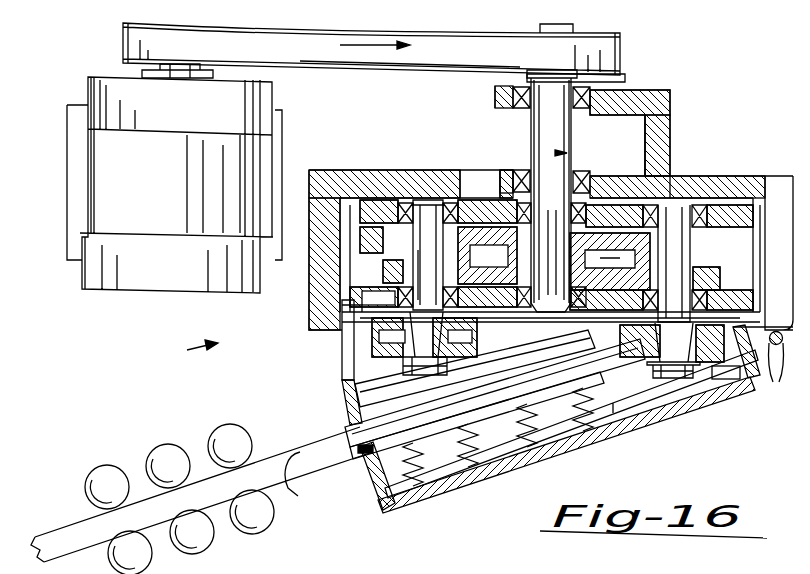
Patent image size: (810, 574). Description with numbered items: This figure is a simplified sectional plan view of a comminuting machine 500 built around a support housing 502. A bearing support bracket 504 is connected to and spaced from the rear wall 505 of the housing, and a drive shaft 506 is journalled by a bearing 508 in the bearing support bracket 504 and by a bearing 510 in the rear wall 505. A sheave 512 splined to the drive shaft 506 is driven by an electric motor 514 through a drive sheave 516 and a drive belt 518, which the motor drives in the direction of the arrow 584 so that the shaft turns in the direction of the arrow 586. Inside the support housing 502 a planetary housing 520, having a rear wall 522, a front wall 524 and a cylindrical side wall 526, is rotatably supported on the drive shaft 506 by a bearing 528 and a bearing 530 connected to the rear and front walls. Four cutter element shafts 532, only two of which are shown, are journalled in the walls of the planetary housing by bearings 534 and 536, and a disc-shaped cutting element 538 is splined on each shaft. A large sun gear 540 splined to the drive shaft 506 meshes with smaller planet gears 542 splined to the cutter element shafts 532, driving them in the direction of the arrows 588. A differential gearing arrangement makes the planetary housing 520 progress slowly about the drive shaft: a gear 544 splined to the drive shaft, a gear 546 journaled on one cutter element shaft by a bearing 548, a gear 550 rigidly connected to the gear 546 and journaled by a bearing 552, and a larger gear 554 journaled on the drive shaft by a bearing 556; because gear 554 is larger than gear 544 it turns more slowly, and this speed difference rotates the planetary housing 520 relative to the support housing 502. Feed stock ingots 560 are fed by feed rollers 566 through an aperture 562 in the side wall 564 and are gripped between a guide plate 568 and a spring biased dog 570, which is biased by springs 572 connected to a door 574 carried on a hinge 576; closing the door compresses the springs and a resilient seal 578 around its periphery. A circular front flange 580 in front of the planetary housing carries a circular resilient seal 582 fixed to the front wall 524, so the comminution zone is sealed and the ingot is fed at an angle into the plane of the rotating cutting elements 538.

The comminuting machine 500 is at (186, 350).
The support housing 502 is at (384, 164).
The bearing support bracket 504 is at (666, 110).
The rear wall 505 is at (673, 178).
The drive shaft 506 is at (532, 125).
The bearing 508 is at (580, 112).
The bearing 510 is at (583, 171).
The sheave 512 is at (528, 78).
The electric motor 514 is at (88, 85).
The drive sheave 516 is at (140, 24).
The drive belt 518 is at (378, 64).
The planetary housing 520 is at (333, 289).
The rear wall 522 is at (372, 170).
The front wall 524 is at (433, 297).
The cylindrical side wall 526 is at (352, 263).
The bearing 528 is at (513, 185).
The bearing 530 is at (542, 322).
The cutter element shaft 532 is at (410, 360).
The bearing 534 is at (401, 171).
The bearing 536 is at (557, 350).
The cutting element 538 is at (377, 344).
The sun gear 540 is at (612, 274).
The planet gear 542 is at (398, 272).
The gear 544 is at (515, 263).
The gear 546 is at (387, 248).
The bearing 548 is at (427, 275).
The gear 550 is at (373, 232).
The bearing 552 is at (429, 221).
The gear 554 is at (553, 252).
The bearing 556 is at (553, 252).
The feed stock ingot 560 is at (290, 488).
The aperture 562 is at (363, 453).
The side wall 564 is at (375, 490).
The feed roller 566 is at (225, 426).
The guide plate 568 is at (432, 396).
The dog 570 is at (452, 424).
The spring 572 is at (447, 468).
The door 574 is at (563, 452).
The hinge 576 is at (775, 378).
The resilient seal 578 is at (627, 391).
The front flange 580 is at (358, 323).
The resilient seal 582 is at (357, 308).
The arrow 584 is at (370, 46).
The arrow 586 is at (556, 153).
The arrow 588 is at (641, 362).